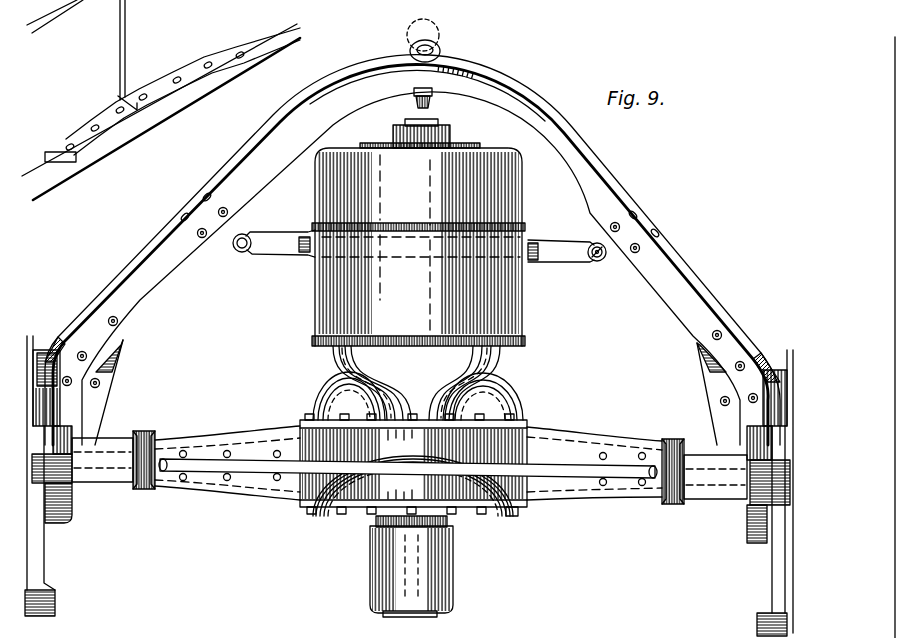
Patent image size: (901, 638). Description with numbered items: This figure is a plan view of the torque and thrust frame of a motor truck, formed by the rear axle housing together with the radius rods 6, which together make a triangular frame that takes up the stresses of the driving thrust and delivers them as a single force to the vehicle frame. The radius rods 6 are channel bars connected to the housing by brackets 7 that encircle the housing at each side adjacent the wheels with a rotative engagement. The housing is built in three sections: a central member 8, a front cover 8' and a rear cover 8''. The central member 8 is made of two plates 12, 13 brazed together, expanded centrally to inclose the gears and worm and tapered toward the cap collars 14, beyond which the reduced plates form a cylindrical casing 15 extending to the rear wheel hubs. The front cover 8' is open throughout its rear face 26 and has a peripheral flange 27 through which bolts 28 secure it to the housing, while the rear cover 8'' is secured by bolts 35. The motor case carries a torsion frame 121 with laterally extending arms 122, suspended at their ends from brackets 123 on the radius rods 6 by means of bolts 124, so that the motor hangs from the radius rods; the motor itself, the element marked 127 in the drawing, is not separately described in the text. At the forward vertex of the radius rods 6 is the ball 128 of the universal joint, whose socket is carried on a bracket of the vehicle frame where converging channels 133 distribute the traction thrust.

The radius rods 6 is at (137, 298).
The brackets 7 is at (60, 470).
The central member 8 is at (594, 479).
The front cover 8' is at (403, 383).
The rear cover 8'' is at (413, 536).
The casing plate 12 is at (208, 444).
The casing plate 13 is at (196, 470).
The cap collars 14 is at (153, 435).
The cylindrical casing 15 is at (103, 446).
The rear face 26 is at (405, 424).
The peripheral flange 27 is at (304, 422).
The bolts 28 is at (514, 424).
The bolts 35 is at (513, 524).
The torsion frame 121 is at (527, 240).
The laterally extending arms 122 is at (288, 240).
The brackets 123 is at (220, 243).
The bolts 124 is at (603, 253).
The tank 127 is at (428, 181).
The ball 128 is at (440, 38).
The converging horizontal channels 133 is at (161, 100).